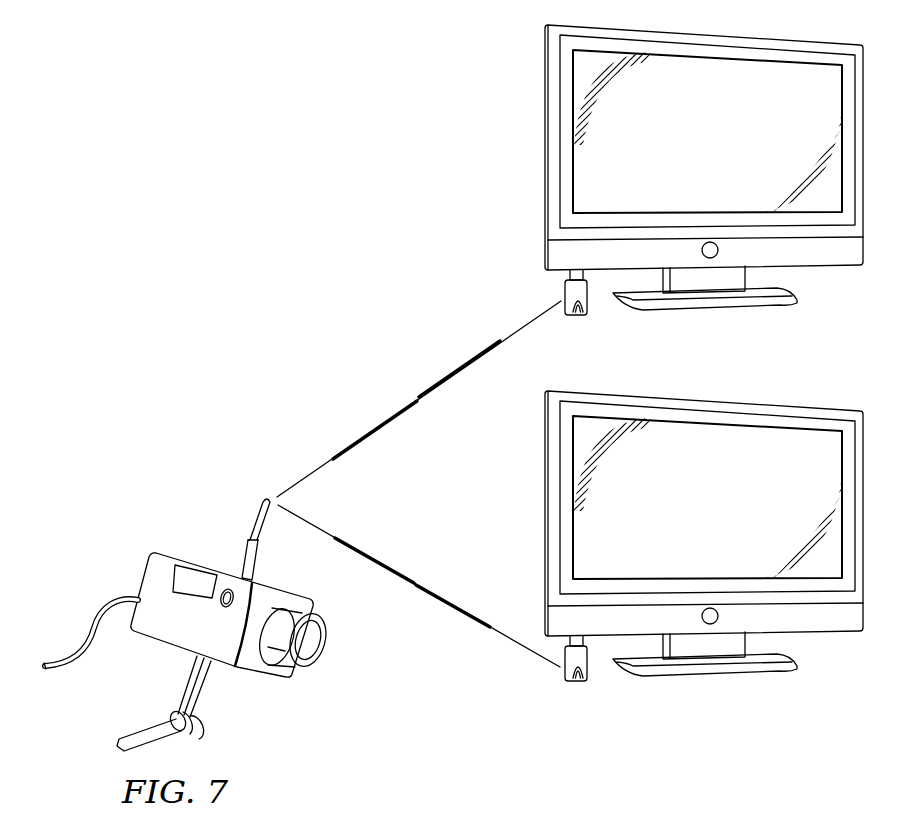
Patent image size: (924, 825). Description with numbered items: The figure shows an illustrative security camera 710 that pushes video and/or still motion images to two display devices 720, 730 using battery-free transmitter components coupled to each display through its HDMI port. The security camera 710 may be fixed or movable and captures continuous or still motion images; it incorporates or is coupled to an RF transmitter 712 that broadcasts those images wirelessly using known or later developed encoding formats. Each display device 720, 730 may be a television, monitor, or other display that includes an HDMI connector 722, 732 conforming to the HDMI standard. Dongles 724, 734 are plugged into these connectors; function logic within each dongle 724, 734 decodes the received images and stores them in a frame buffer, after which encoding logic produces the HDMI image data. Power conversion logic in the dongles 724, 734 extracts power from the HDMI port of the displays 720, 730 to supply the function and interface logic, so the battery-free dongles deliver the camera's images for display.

The security camera 710 is at (146, 578).
The RF transmitter 712 is at (243, 550).
The display device 720 is at (546, 151).
The HDMI connector 722 is at (588, 276).
The dongle 724 is at (577, 316).
The display device 730 is at (692, 533).
The HDMI connector 732 is at (608, 674).
The dongle 734 is at (563, 700).